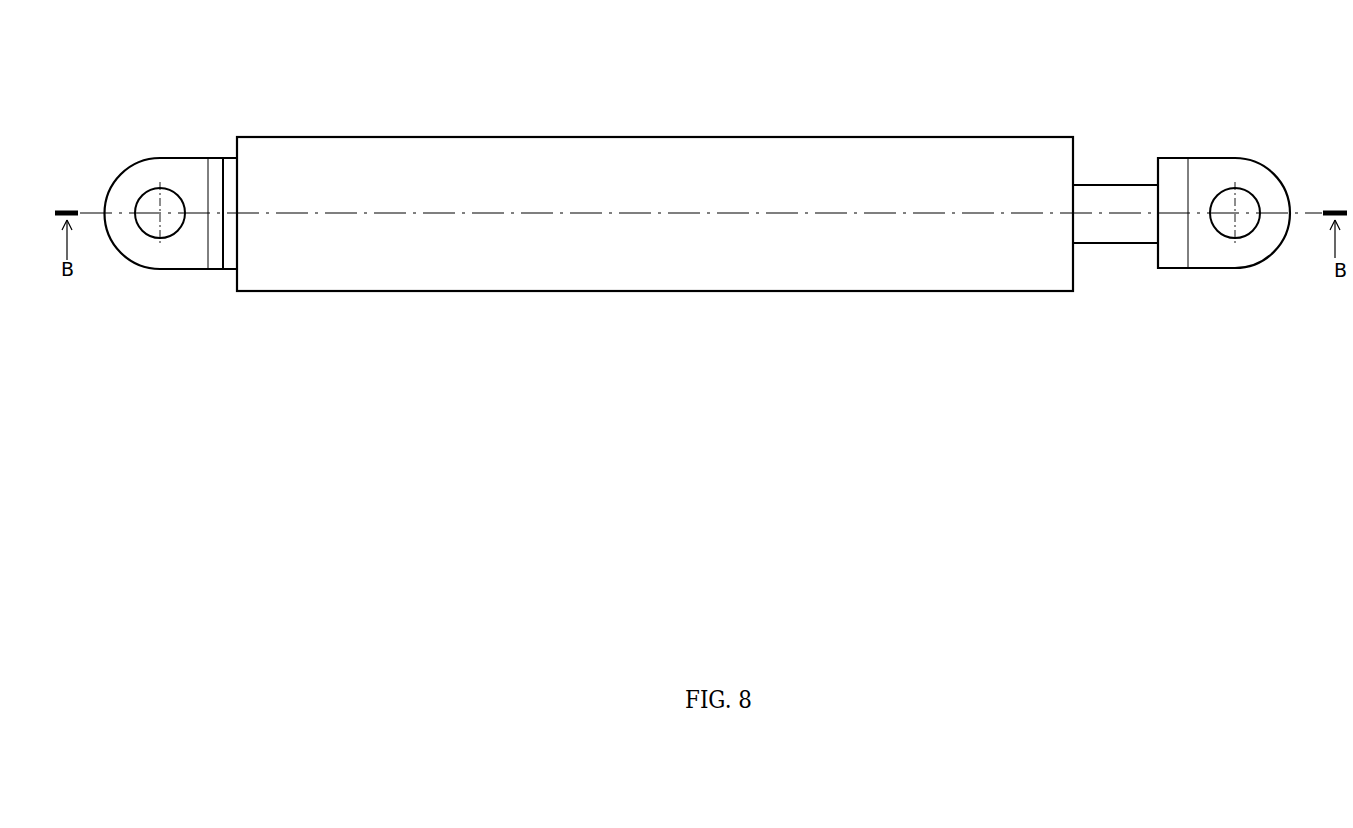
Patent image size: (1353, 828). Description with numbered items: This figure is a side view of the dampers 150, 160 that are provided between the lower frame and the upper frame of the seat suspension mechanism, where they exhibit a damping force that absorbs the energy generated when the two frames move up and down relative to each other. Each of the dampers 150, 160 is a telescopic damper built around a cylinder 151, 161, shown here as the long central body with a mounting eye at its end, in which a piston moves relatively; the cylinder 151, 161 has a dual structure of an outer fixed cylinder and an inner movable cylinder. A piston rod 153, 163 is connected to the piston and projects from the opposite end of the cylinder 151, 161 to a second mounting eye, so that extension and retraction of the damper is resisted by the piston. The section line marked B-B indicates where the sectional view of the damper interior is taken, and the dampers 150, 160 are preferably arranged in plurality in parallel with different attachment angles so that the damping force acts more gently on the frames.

The damper 150 is at (655, 162).
The damper 160 is at (593, 135).
The cylinder 151 is at (225, 162).
The cylinder 161 is at (171, 213).
The piston rod 153 is at (1114, 272).
The piston rod 163 is at (1110, 243).